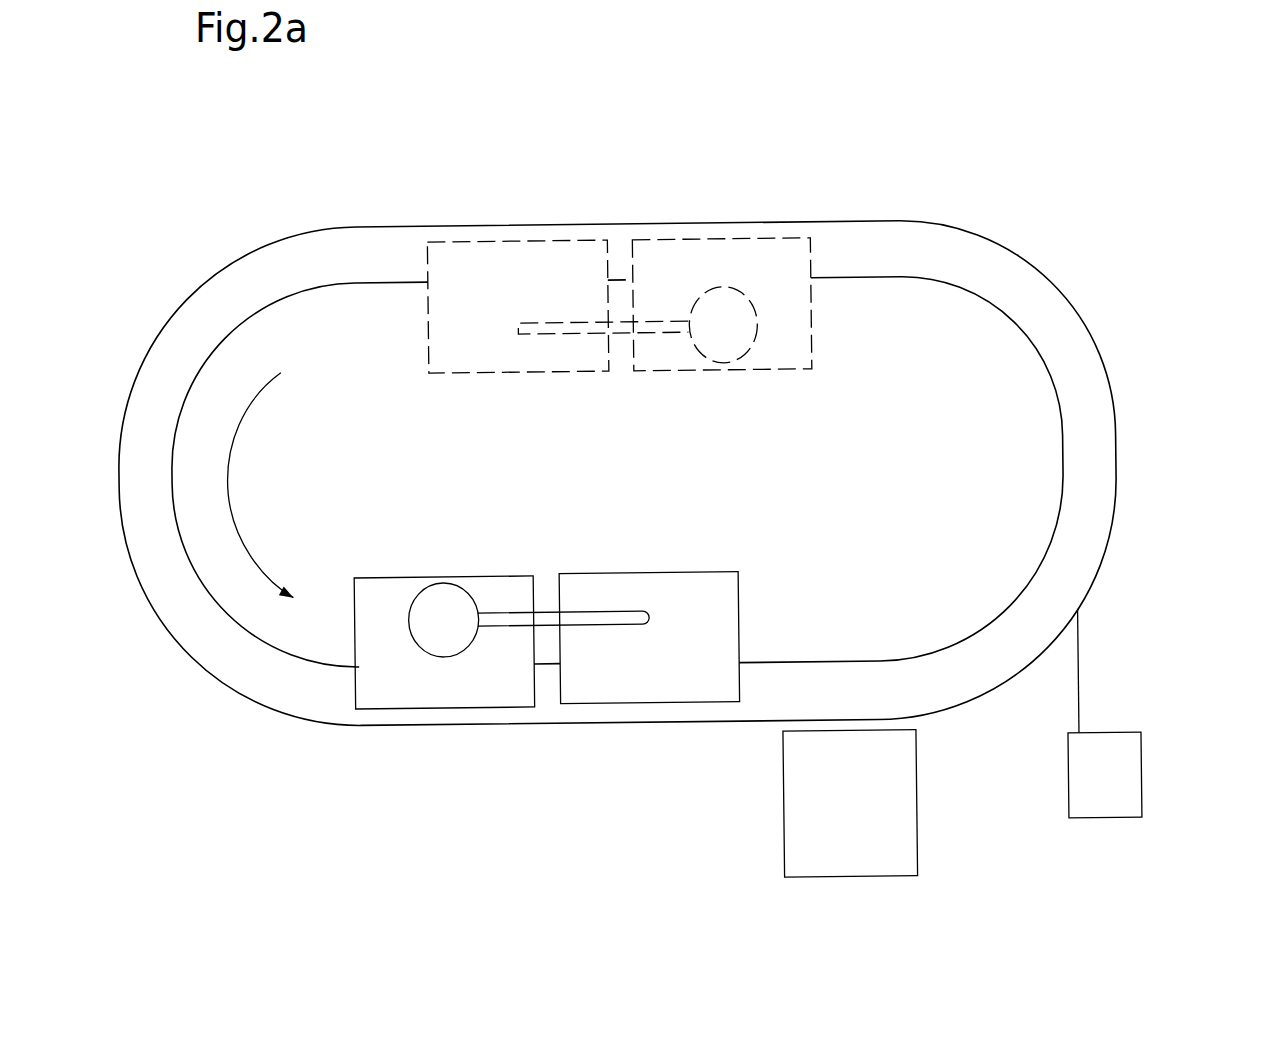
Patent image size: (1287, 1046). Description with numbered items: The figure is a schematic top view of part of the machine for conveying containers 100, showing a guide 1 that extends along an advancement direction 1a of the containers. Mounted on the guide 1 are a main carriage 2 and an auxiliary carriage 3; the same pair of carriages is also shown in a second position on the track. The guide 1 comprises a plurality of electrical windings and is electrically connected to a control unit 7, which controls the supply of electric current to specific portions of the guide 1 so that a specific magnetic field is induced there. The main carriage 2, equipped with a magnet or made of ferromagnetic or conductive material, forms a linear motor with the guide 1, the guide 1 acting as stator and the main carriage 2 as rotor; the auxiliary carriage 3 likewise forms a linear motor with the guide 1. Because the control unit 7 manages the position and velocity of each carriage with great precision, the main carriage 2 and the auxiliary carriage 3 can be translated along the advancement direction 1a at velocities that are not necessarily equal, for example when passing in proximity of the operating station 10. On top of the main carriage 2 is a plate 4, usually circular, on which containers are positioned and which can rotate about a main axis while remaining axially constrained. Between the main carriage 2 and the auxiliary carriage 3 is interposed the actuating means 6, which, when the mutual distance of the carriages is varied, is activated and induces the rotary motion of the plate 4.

The guide 1 is at (974, 621).
The advancement direction 1a is at (264, 486).
The main carriage 2 is at (389, 686).
The auxiliary carriage 3 is at (582, 686).
The plate 4 is at (450, 608).
The actuating means 6 is at (600, 613).
The control unit 7 is at (1100, 783).
The operating station 10 is at (903, 832).
The machine for conveying containers 100 is at (1155, 229).